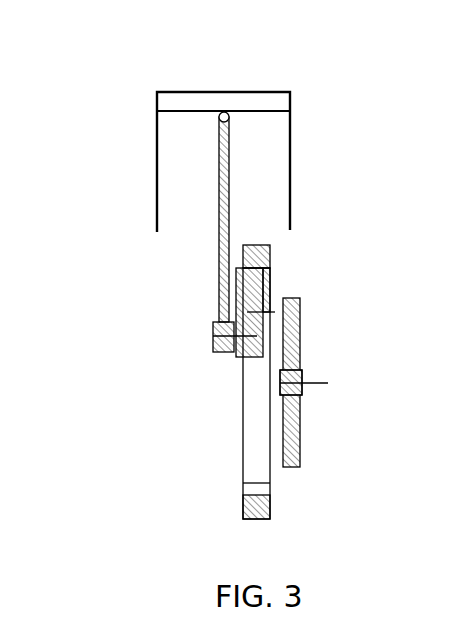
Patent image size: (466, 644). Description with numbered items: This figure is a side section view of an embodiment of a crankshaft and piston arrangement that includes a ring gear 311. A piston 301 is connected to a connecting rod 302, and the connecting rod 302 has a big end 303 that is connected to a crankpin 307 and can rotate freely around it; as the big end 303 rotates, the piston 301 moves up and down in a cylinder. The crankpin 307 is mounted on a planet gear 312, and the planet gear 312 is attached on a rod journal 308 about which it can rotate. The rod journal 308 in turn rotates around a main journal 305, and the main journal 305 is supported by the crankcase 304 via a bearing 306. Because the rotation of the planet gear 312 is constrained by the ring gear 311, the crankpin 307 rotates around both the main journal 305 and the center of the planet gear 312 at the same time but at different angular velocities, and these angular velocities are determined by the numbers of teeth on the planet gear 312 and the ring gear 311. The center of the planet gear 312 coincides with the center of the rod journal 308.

The piston 301 is at (214, 103).
The connecting rod 302 is at (218, 208).
The big end 303 is at (213, 313).
The crankcase 304 is at (295, 448).
The main journal 305 is at (325, 387).
The bearing 306 is at (302, 373).
The crankpin 307 is at (210, 335).
The rod journal 308 is at (275, 312).
The ring gear 311 is at (250, 488).
The planet gear 312 is at (246, 357).